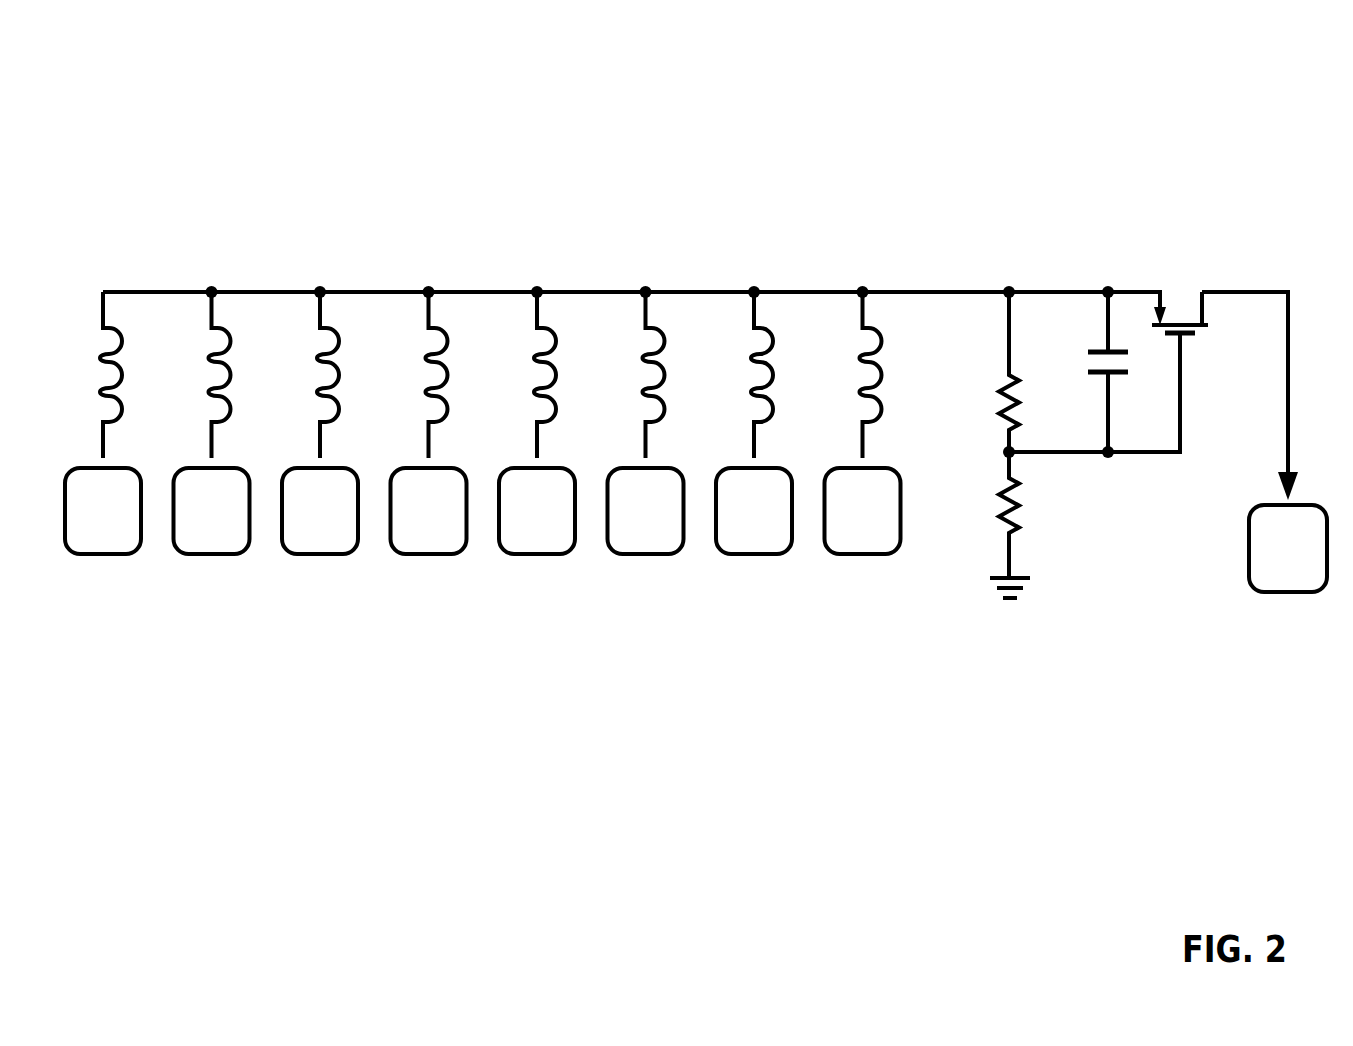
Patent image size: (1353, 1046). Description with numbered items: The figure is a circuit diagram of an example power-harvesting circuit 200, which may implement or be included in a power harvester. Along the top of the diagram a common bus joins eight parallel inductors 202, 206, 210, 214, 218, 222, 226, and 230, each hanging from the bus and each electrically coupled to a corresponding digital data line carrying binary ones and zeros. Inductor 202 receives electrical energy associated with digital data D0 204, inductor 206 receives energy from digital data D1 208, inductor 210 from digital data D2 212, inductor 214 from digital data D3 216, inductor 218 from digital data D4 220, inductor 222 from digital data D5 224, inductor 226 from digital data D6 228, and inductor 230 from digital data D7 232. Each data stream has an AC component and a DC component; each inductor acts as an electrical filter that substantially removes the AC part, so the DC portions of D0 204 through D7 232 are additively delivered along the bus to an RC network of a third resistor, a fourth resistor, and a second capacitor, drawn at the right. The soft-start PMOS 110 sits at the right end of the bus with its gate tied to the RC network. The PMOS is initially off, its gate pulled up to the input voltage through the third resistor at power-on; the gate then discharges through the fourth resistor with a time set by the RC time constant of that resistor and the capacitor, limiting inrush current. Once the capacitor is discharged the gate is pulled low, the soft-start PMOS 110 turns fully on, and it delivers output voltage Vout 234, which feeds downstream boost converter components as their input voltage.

The power-harvesting circuit 200 is at (1214, 84).
The inductor 202 is at (121, 333).
The inductor 206 is at (230, 333).
The inductor 210 is at (338, 333).
The inductor 214 is at (446, 333).
The inductor 218 is at (555, 333).
The inductor 222 is at (664, 333).
The inductor 226 is at (772, 333).
The inductor 230 is at (880, 333).
The digital data D0 204 is at (84, 535).
The digital data D1 208 is at (192, 535).
The digital data D2 212 is at (301, 535).
The digital data D3 216 is at (448, 535).
The digital data D4 220 is at (518, 535).
The digital data D5 224 is at (626, 535).
The digital data D6 228 is at (735, 535).
The digital data D7 232 is at (882, 535).
The soft-start PMOS 110 is at (1210, 290).
The output voltage Vout 234 is at (1269, 572).